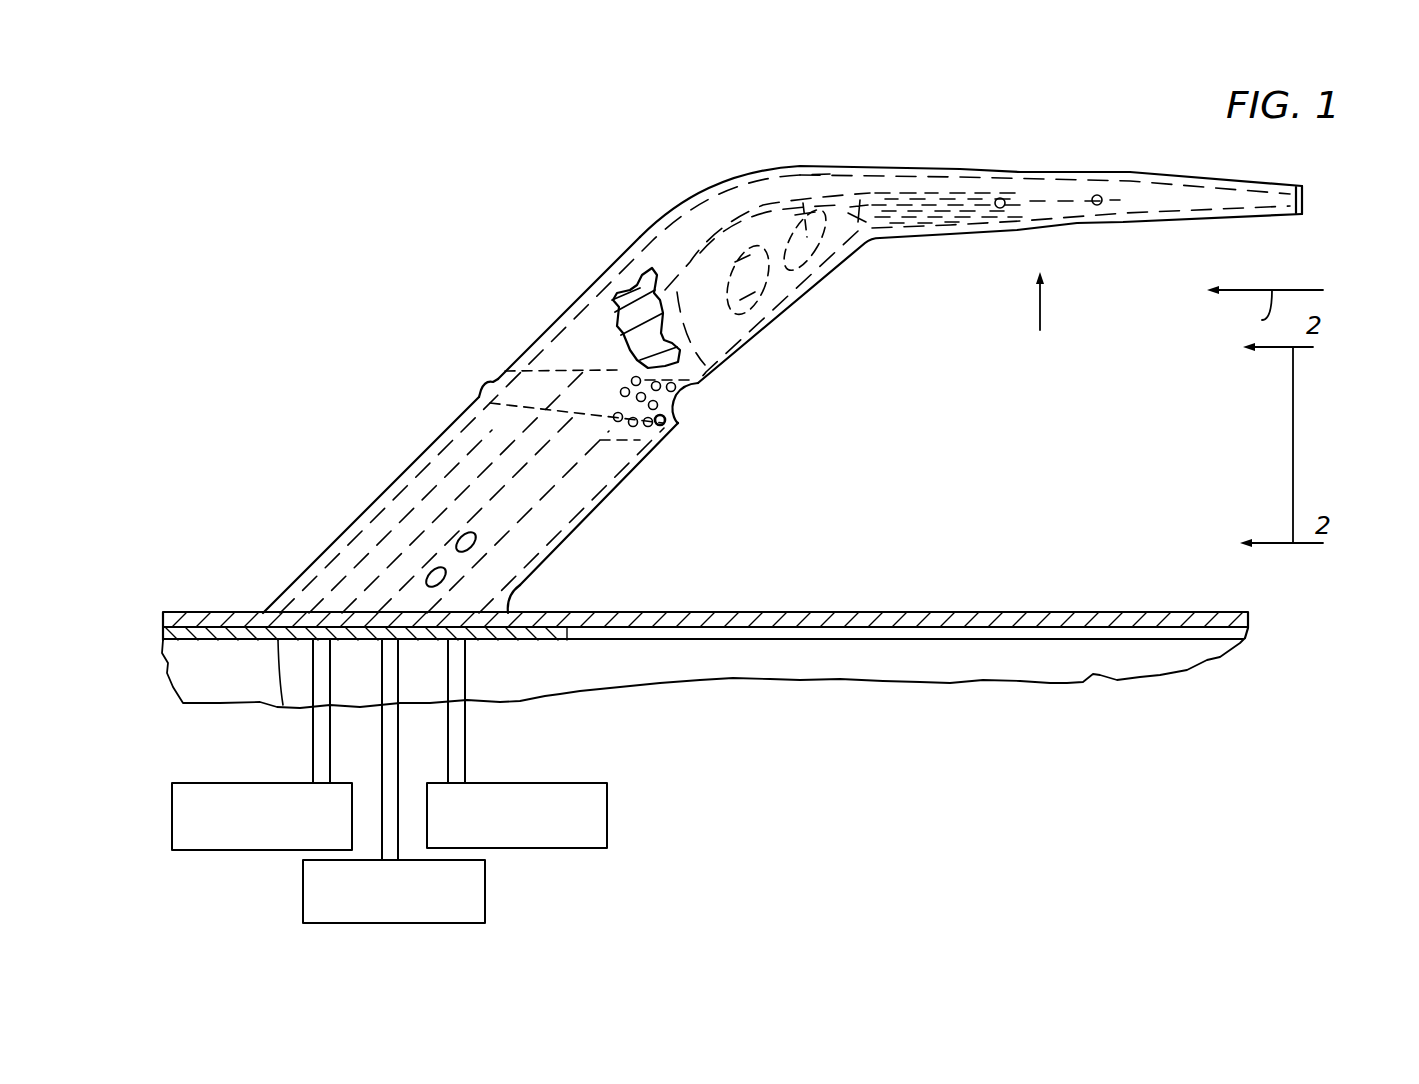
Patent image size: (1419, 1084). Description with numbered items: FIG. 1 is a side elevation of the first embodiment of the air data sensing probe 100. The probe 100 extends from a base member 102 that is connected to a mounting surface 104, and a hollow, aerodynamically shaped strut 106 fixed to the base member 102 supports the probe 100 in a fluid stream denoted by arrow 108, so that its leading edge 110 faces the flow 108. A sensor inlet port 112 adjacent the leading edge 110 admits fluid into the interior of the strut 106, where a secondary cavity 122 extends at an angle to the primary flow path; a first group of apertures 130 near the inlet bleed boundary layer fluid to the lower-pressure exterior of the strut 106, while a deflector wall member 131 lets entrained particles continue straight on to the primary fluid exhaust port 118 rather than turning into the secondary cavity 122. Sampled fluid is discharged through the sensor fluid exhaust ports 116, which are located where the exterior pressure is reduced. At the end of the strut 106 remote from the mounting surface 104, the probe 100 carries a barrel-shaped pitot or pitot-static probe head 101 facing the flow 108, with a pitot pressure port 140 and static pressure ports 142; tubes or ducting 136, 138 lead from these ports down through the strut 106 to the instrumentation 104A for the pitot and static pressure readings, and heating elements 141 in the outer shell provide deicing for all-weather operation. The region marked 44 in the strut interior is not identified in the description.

The air data sensing probe 100 is at (391, 250).
The barrel-shaped pitot or pitot-static probe head 101 is at (1040, 330).
The base member 102 is at (278, 640).
The mounting surface 104 is at (1067, 611).
The instruments 104A is at (487, 883).
The strut 106 is at (577, 337).
The fluid stream 108 is at (1051, 258).
The leading edge 110 is at (800, 369).
The sensor inlet port 112 is at (707, 412).
The sensor fluid exhaust port 116 is at (428, 572).
The primary fluid exhaust port 118 is at (453, 381).
The secondary cavity 122 is at (545, 500).
The first group of apertures 130 is at (628, 421).
The deflector wall member 131 is at (622, 428).
The tube or ducting 136 is at (645, 355).
The tube or ducting 138 is at (658, 337).
The pitot pressure port 140 is at (1303, 199).
The heating element 141 is at (788, 304).
The static pressure port 142 is at (1000, 208).
The sensing element 44 is at (581, 406).